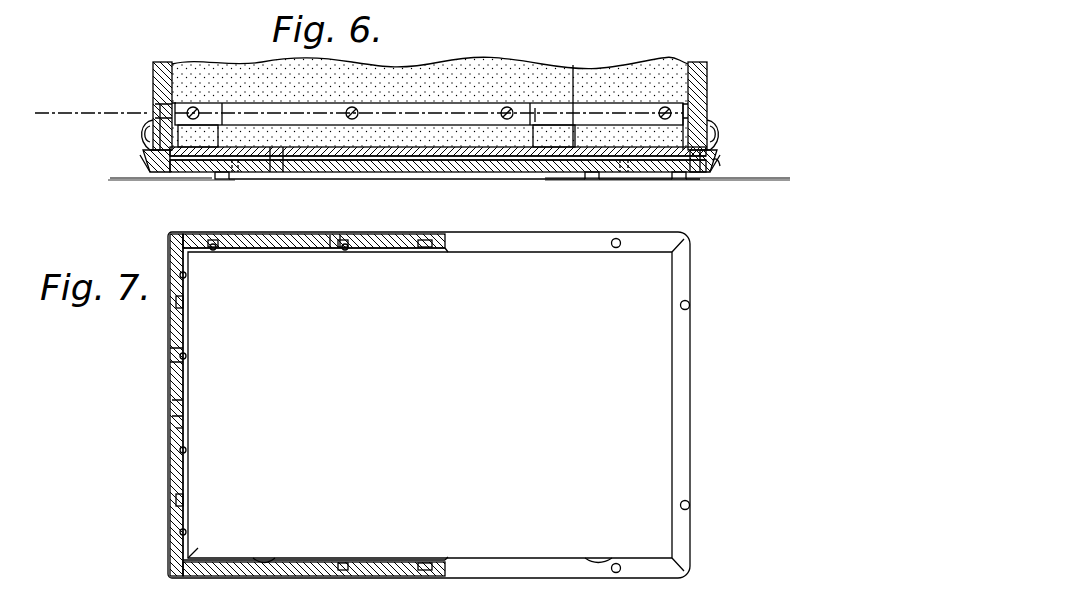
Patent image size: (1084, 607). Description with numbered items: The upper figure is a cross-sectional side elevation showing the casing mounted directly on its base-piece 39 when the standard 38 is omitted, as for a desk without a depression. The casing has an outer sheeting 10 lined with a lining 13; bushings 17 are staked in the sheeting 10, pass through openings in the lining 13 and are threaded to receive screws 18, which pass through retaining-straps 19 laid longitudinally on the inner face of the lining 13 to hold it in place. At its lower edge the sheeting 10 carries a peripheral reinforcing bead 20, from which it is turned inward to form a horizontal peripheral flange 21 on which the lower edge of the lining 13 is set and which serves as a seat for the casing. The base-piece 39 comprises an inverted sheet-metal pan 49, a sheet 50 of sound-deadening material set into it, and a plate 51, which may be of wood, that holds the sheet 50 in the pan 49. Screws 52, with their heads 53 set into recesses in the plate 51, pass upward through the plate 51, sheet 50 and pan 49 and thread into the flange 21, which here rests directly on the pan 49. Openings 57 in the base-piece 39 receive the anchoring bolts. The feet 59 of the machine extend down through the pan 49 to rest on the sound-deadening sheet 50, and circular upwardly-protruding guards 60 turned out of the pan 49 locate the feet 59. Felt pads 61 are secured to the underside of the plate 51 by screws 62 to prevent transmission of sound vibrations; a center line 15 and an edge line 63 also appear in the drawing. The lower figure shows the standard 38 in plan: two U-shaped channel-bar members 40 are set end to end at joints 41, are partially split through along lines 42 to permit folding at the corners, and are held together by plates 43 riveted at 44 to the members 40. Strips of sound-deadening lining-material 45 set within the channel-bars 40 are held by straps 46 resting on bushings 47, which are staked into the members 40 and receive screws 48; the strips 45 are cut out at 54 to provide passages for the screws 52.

In FIG. 6, the sheeting 10 is at (720, 93).
In FIG. 6, the lining 13 is at (232, 68).
In FIG. 6, the center axis 15 is at (55, 114).
In FIG. 6, the bushings 17 is at (152, 110).
In FIG. 6, the screws 18 is at (197, 110).
In FIG. 6, the retaining-straps 19 is at (185, 103).
In FIG. 6, the reinforcing bead 20 is at (148, 126).
In FIG. 6, the horizontal peripheral flange 21 is at (150, 155).
In FIG. 7, the standard 38 is at (161, 484).
In FIG. 6, the base-piece 39 is at (135, 175).
In FIG. 7, the U-shaped sheet-metal members 40 is at (533, 240).
In FIG. 7, the joints 41 is at (188, 413).
In FIG. 7, the split lines 42 is at (684, 240).
In FIG. 7, the plates 43 is at (172, 430).
In FIG. 7, the rivets 44 is at (176, 408).
In FIG. 7, the sound-deadening lining-material strips 45 is at (398, 236).
In FIG. 7, the straps 46 is at (302, 250).
In FIG. 7, the bushings 47 is at (346, 236).
In FIG. 7, the screws 48 is at (344, 250).
In FIG. 6, the inverted sheet-metal pan 49 is at (715, 160).
In FIG. 6, the sound-deadening sheet 50 is at (455, 160).
In FIG. 6, the plate 51 is at (493, 170).
In FIG. 6, the screws 52 is at (215, 178).
In FIG. 6, the screw heads 53 is at (163, 173).
In FIG. 7, the cut-outs 54 is at (421, 250).
In FIG. 6, the openings 57 is at (285, 172).
In FIG. 6, the feet 59 is at (224, 124).
In FIG. 6, the guards 60 is at (220, 140).
In FIG. 6, the pads 61 is at (212, 180).
In FIG. 6, the screws 62 is at (229, 174).
In FIG. 6, the base line 63 is at (128, 181).